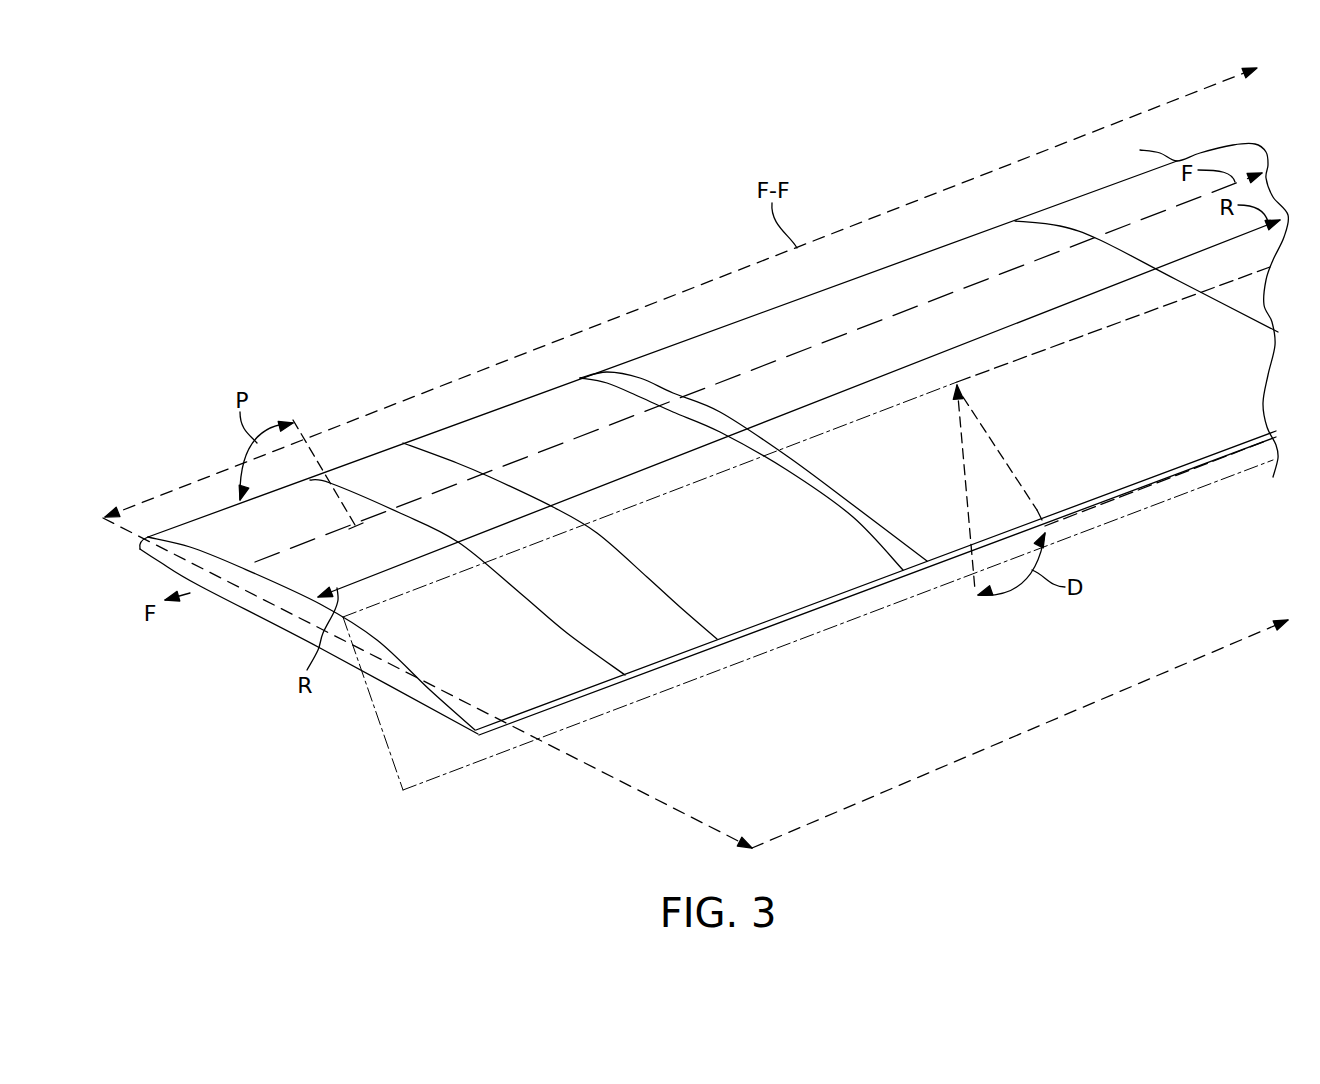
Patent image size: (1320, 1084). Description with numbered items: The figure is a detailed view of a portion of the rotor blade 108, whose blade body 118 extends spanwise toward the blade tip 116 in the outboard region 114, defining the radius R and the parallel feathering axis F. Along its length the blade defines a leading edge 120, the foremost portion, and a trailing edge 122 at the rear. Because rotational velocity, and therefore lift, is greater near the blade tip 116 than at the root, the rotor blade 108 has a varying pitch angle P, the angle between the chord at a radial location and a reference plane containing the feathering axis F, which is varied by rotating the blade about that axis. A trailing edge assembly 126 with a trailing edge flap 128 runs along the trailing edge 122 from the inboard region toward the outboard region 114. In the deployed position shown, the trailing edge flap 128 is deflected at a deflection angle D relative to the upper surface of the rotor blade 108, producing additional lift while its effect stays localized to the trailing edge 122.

The rotor blade 108 is at (933, 258).
The outboard region 114 is at (478, 392).
The blade tip 116 is at (222, 595).
The blade body 118 is at (678, 367).
The leading edge 120 is at (562, 385).
The trailing edge 122 is at (800, 620).
The trailing edge assembly 126 is at (1133, 493).
The trailing edge flap 128 is at (1167, 442).